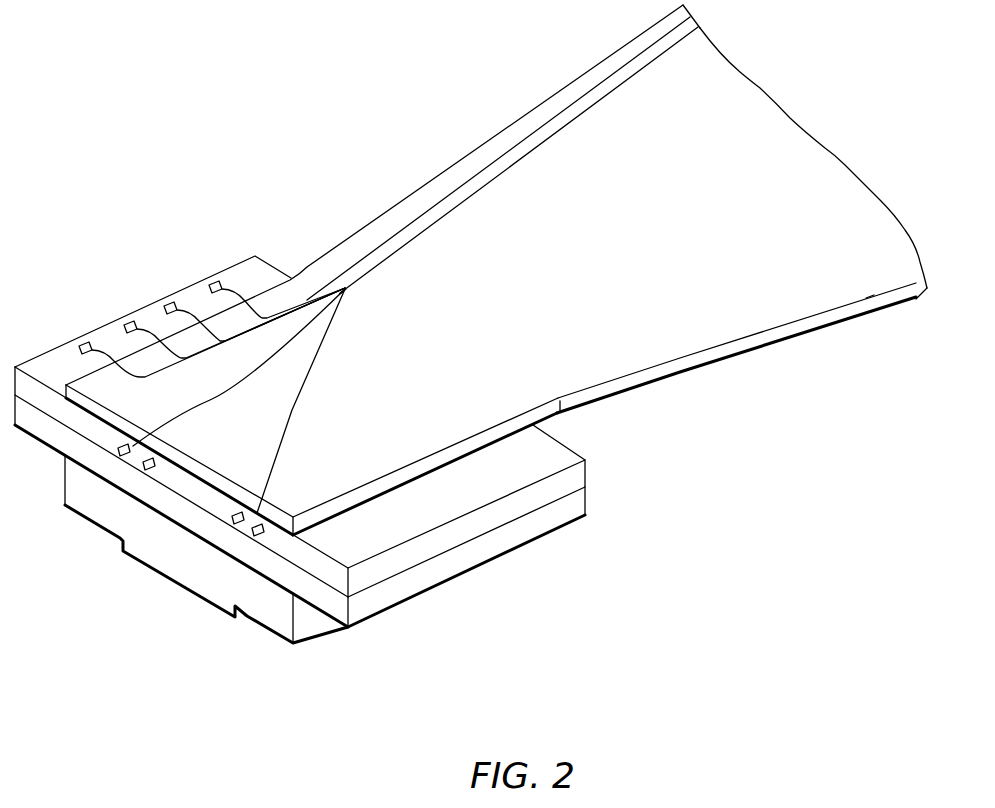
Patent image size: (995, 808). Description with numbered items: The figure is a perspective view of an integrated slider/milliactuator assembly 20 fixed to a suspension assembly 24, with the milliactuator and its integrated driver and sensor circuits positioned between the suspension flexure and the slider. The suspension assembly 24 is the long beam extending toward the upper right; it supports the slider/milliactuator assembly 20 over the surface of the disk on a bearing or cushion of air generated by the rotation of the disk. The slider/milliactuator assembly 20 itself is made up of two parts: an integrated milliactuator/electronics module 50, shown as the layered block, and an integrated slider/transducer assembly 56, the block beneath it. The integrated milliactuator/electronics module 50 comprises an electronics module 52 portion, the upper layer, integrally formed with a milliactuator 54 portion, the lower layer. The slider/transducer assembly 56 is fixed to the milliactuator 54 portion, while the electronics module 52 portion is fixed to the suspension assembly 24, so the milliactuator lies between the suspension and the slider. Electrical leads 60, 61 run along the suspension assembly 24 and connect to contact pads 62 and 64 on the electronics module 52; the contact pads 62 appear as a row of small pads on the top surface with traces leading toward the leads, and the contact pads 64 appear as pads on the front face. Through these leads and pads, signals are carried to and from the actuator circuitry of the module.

The slider/milliactuator assembly 20 is at (196, 668).
The suspension assembly 24 is at (735, 325).
The integrated milliactuator/electronics module 50 is at (608, 456).
The electronics module portion 52 is at (420, 548).
The milliactuator portion 54 is at (518, 538).
The integrated slider/transducer assembly 56 is at (310, 626).
The electrical lead 60 is at (606, 93).
The electrical lead 61 is at (524, 125).
The contact pads 62 is at (205, 283).
The contact pads 64 is at (253, 529).